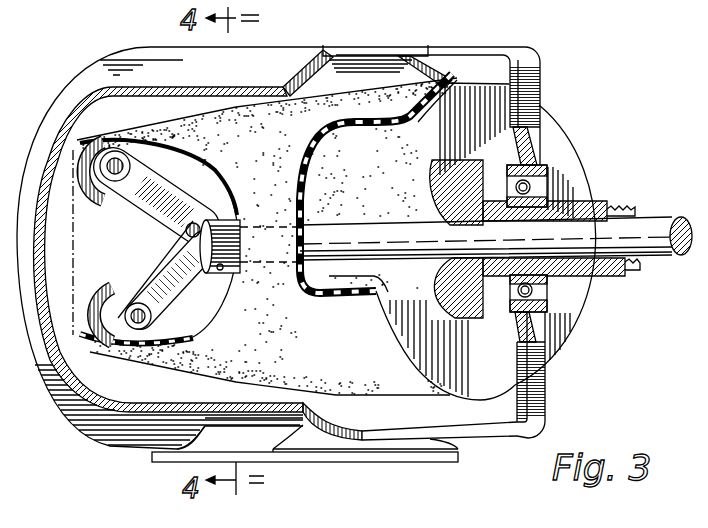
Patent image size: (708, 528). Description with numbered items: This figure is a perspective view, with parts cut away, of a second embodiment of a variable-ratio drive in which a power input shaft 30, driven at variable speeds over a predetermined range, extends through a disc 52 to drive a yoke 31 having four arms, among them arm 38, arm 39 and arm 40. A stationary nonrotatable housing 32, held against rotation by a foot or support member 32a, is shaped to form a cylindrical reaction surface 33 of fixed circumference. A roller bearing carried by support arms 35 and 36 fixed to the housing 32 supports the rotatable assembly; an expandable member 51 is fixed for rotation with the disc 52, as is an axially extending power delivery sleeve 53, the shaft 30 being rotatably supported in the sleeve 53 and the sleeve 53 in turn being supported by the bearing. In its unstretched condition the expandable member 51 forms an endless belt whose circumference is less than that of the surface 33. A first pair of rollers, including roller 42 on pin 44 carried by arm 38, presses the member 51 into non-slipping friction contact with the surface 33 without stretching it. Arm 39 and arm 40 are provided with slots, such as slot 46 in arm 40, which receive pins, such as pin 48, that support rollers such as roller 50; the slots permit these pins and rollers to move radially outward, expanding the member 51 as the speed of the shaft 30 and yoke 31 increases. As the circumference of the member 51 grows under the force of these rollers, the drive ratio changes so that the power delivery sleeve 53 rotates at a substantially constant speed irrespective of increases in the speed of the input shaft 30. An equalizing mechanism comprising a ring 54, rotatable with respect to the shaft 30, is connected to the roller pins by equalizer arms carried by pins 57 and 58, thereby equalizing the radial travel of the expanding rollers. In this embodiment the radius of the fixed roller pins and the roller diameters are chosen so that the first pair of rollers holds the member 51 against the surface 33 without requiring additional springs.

The power input shaft 30 is at (645, 238).
The yoke 31 is at (164, 247).
The stationary nonrotatable housing 32 is at (328, 420).
The foot or support member 32a is at (408, 450).
The cylindrical reaction surface 33 is at (239, 404).
The support arm 35 is at (532, 72).
The support arm 36 is at (540, 372).
The arm of yoke 38 is at (168, 220).
The arm of yoke 39 is at (221, 212).
The arm of yoke 40 is at (173, 286).
The roller 42 is at (106, 200).
The pin 44 is at (126, 164).
The slot 46 is at (107, 333).
The pin 48 is at (148, 315).
The roller 50 is at (100, 293).
The expandable member 51 is at (217, 157).
The disc 52 is at (428, 178).
The power delivery sleeve 53 is at (605, 206).
The ring 54 is at (510, 192).
The pin 57 is at (224, 269).
The pin 58 is at (249, 246).